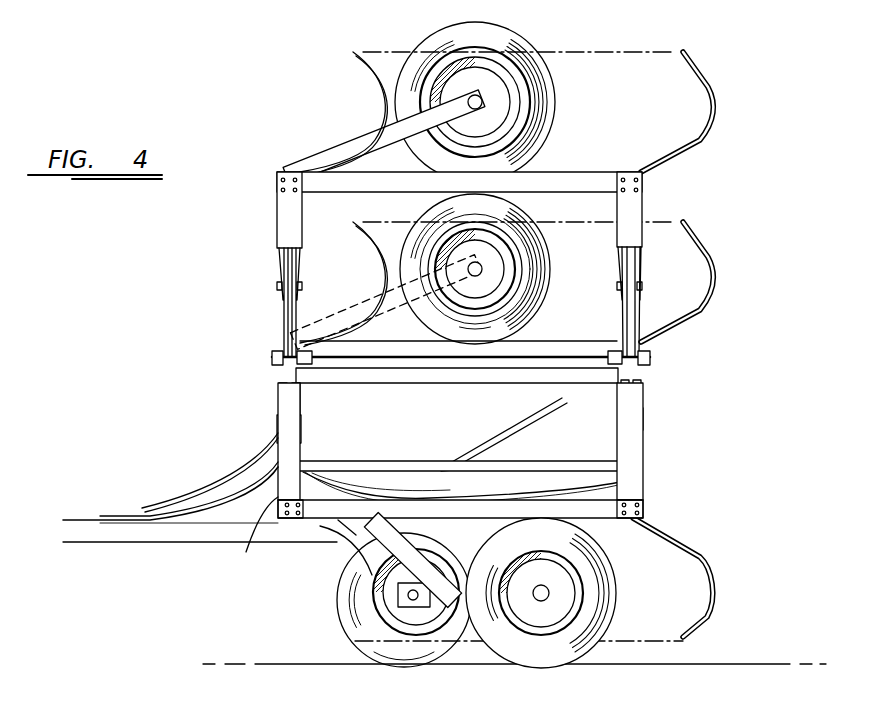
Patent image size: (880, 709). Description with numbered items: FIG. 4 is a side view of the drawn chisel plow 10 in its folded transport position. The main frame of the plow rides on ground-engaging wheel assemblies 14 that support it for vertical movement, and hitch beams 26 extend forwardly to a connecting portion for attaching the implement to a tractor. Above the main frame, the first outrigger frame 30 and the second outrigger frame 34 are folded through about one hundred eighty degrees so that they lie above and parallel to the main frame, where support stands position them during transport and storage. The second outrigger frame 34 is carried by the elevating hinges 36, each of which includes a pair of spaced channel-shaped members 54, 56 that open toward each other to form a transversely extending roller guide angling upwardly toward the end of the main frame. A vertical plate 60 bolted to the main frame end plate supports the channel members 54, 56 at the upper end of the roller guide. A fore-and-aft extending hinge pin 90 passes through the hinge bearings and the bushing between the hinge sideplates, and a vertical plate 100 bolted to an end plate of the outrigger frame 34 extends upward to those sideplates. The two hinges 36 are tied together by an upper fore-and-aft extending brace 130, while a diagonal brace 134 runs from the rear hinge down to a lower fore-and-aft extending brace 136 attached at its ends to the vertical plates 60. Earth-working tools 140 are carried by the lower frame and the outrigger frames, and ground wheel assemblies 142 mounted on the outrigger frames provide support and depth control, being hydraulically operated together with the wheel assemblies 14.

The drawn chisel plow 10 is at (296, 98).
The ground-engaging wheel assemblies 14 is at (322, 596).
The hitch beams 26 is at (154, 534).
The first outrigger frame 30 is at (597, 310).
The second outrigger frame 34 is at (598, 170).
The elevating fold hinges 36 is at (262, 291).
The channel-shaped member 54 is at (641, 422).
The channel-shaped member 56 is at (620, 427).
The vertical plate 60 is at (633, 490).
The hinge pin 90 is at (270, 357).
The vertical plate 100 is at (283, 220).
The upper fore-and-aft extending brace 130 is at (433, 378).
The diagonal brace 134 is at (512, 433).
The lower fore-and-aft extending brace 136 is at (396, 465).
The earth-working tools 140 is at (710, 92).
The ground wheel assemblies 142 is at (523, 25).